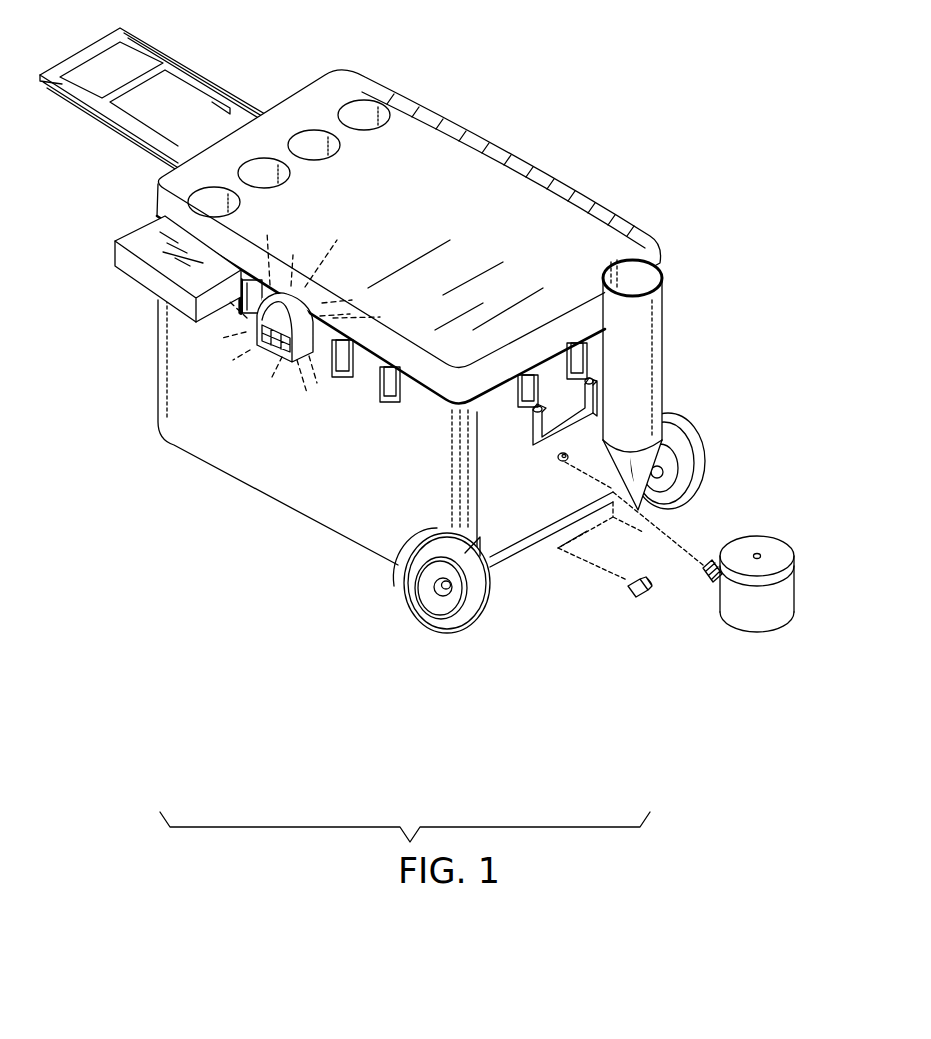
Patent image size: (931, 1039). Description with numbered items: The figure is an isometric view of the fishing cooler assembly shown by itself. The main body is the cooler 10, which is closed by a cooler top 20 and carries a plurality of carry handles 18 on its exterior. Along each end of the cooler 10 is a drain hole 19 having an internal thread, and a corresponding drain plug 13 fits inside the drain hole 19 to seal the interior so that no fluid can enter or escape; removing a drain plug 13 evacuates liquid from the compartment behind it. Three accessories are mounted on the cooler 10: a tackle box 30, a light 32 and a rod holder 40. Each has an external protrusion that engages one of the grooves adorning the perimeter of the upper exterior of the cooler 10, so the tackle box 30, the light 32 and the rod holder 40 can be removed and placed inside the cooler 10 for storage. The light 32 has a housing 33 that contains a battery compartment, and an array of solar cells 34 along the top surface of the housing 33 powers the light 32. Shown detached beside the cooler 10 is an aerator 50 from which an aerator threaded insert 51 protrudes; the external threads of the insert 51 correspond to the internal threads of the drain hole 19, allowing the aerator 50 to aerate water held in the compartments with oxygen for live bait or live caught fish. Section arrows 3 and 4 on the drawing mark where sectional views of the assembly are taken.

The section line 3- 3 is at (215, 100).
The section line 4- 4 is at (417, 87).
The cooler 10 is at (320, 480).
The drain plug 13 is at (643, 604).
The carry handles 18 is at (533, 449).
The drain holes 19 is at (563, 462).
The cooler top 20 is at (503, 200).
The tackle box 30 is at (167, 295).
The light 32 is at (257, 335).
The housing 33 is at (293, 352).
The solar cells 34 is at (264, 352).
The rod holder 40 is at (650, 322).
The aerator 50 is at (783, 597).
The aerator threaded insert 51 is at (713, 584).